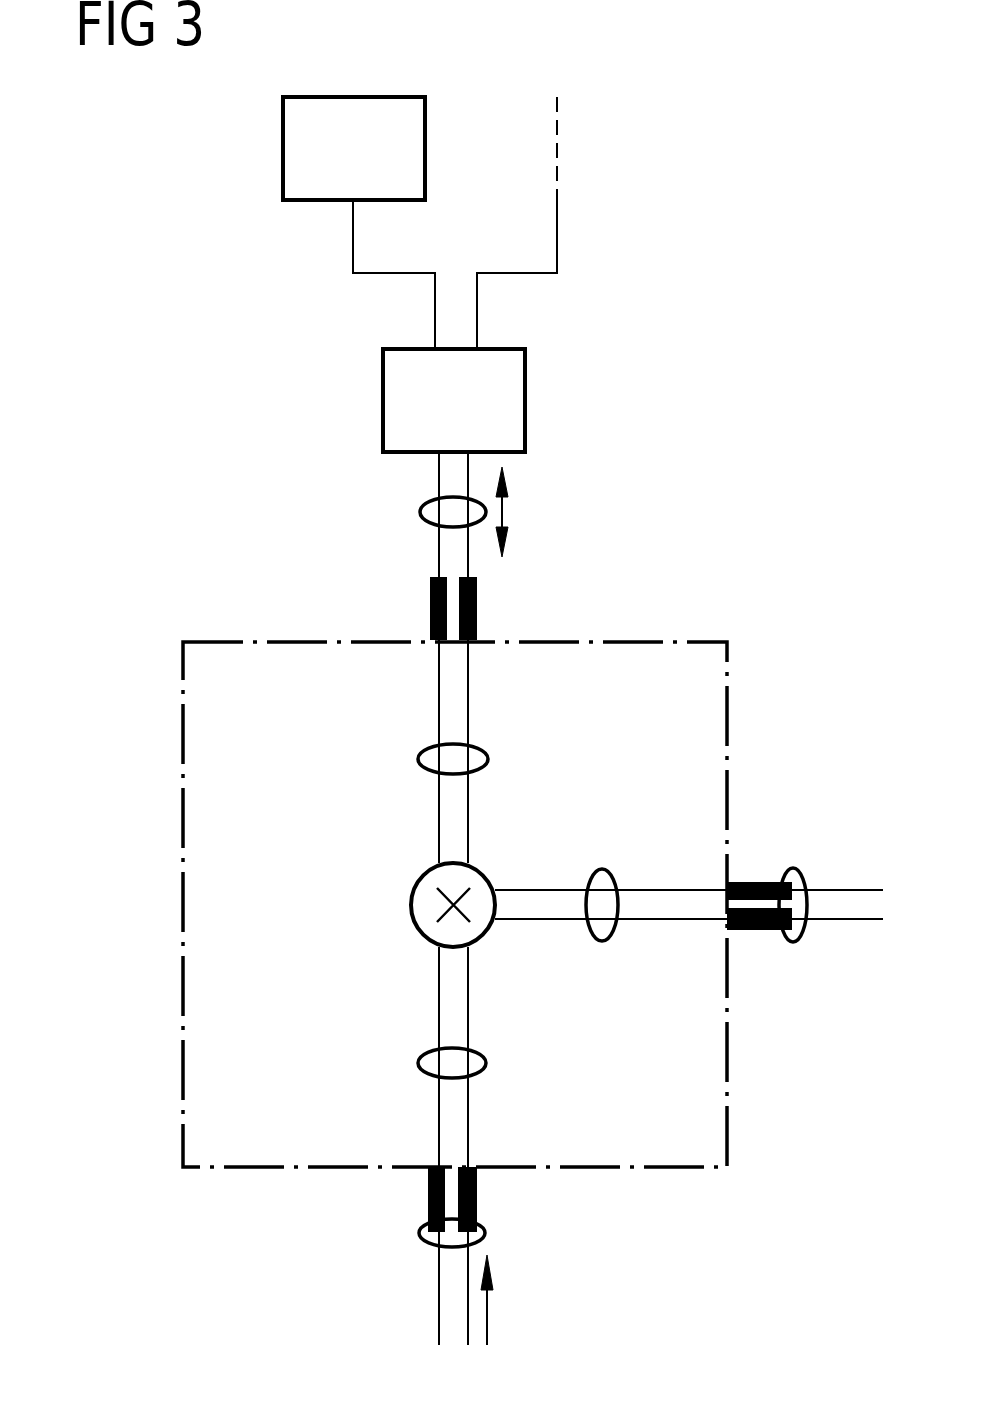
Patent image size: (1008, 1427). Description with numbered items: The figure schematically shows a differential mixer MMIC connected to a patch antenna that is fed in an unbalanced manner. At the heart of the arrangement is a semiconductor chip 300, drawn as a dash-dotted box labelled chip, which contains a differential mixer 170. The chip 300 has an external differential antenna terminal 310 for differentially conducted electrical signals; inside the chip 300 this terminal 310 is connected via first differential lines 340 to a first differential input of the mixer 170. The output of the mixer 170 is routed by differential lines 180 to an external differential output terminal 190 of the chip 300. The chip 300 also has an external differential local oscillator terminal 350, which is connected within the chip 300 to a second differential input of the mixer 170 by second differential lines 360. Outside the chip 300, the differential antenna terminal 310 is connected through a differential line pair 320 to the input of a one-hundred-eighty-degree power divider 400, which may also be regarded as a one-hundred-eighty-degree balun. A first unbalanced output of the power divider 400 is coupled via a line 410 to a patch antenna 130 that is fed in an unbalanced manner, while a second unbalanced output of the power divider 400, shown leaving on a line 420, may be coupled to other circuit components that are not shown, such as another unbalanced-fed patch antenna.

The patch antenna 130 is at (283, 148).
The line 410 is at (353, 237).
The second optical fiber 420 is at (557, 252).
The 180° power divider 400 is at (525, 402).
The differential line pair 320 is at (420, 513).
The differential antenna terminal 310 is at (430, 610).
The semiconductor chip 300 is at (183, 918).
The first differential lines 340 is at (418, 760).
The differential mixer 170 is at (412, 903).
The differential lines 180 is at (598, 868).
The differential output terminal 190 is at (788, 868).
The second differential lines 360 is at (418, 1065).
The differential local oscillator terminal 350 is at (418, 1232).